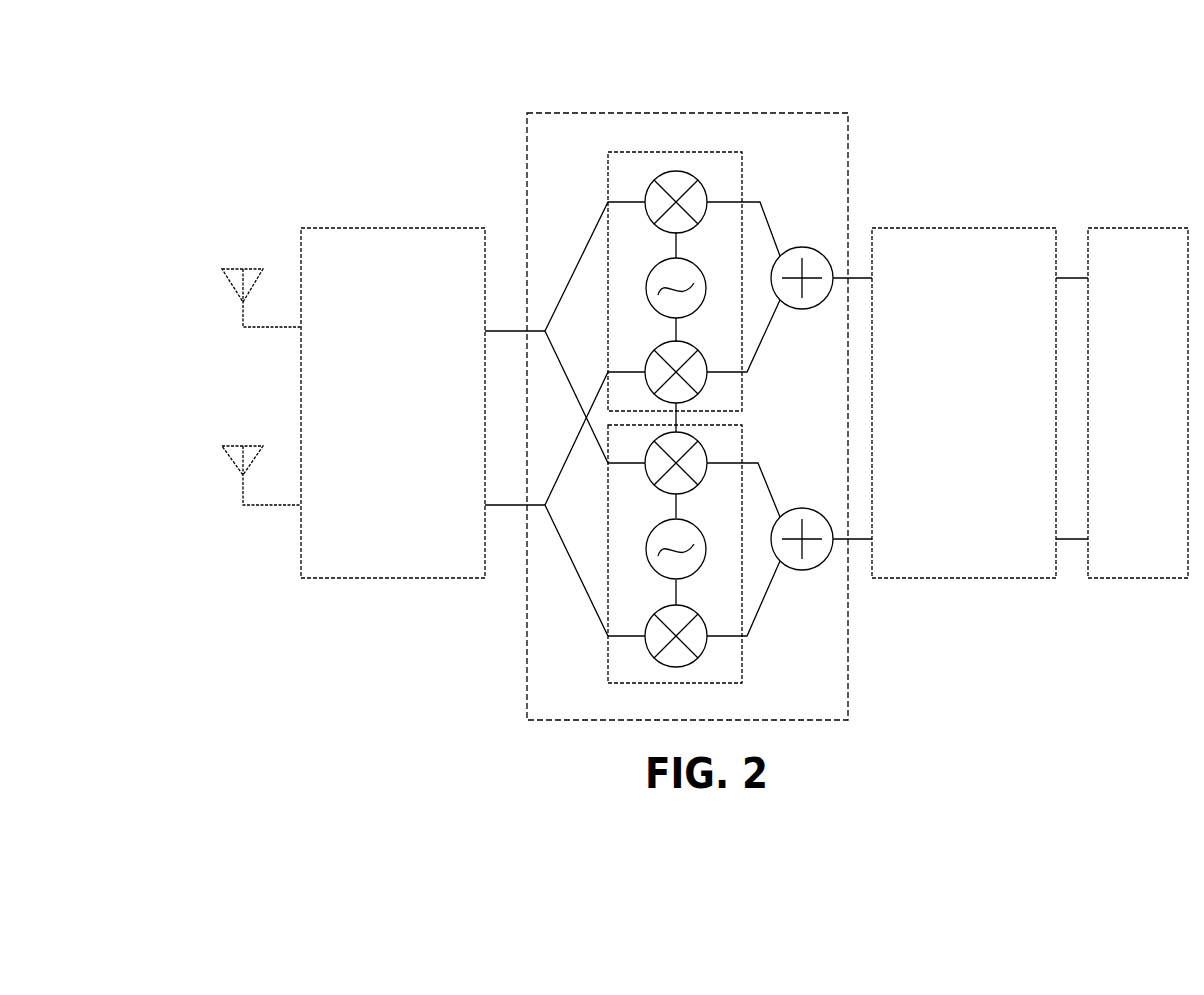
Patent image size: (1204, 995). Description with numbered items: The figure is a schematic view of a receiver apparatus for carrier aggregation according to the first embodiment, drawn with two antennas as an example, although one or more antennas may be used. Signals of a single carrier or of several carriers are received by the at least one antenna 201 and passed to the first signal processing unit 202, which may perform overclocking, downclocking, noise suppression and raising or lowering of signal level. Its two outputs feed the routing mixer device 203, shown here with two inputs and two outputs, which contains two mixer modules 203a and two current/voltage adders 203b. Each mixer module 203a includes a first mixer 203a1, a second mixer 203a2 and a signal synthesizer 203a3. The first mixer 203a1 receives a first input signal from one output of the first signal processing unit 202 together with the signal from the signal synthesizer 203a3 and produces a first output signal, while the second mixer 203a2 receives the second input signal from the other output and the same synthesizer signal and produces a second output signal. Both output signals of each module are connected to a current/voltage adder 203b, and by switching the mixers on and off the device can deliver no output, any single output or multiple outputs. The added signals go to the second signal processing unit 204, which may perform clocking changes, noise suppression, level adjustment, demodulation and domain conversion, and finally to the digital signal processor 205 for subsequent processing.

The antenna 201 is at (229, 281).
The first signal processing unit 202 is at (393, 228).
The routing mixer device 203 is at (703, 113).
The mixer module 203a is at (646, 152).
The first mixer 203a1 is at (703, 187).
The second mixer 203a2 is at (705, 392).
The signal synthesizer 203a3 is at (698, 310).
The current/voltage adder 203b is at (822, 249).
The second signal processing unit 204 is at (965, 228).
The digital signal processor (DSP) 205 is at (1140, 228).